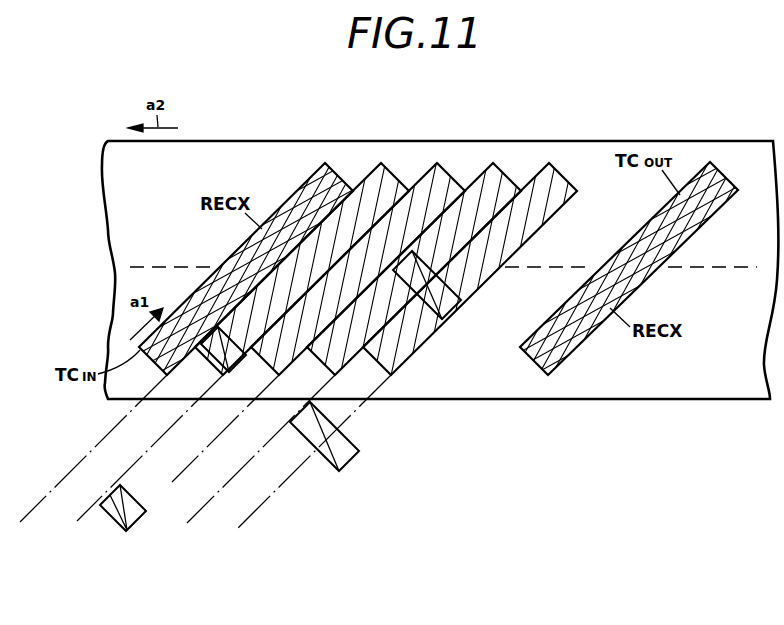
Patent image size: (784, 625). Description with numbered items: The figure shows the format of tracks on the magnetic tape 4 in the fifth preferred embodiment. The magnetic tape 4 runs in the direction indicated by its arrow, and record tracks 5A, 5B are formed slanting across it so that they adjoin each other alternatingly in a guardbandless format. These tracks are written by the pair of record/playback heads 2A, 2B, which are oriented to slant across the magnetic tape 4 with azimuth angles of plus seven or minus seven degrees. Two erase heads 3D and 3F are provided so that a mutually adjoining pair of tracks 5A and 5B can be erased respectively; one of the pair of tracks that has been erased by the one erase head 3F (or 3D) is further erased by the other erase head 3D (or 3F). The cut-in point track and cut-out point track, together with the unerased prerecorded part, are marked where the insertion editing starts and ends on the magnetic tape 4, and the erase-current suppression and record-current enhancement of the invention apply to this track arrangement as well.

The magnetic tape 4 is at (220, 143).
The record track 5A is at (334, 168).
The record track 5B is at (392, 168).
The record/playback head 2A is at (142, 514).
The record/playback head 2B is at (230, 372).
The erase head 3D is at (348, 455).
The erase head 3F is at (452, 302).